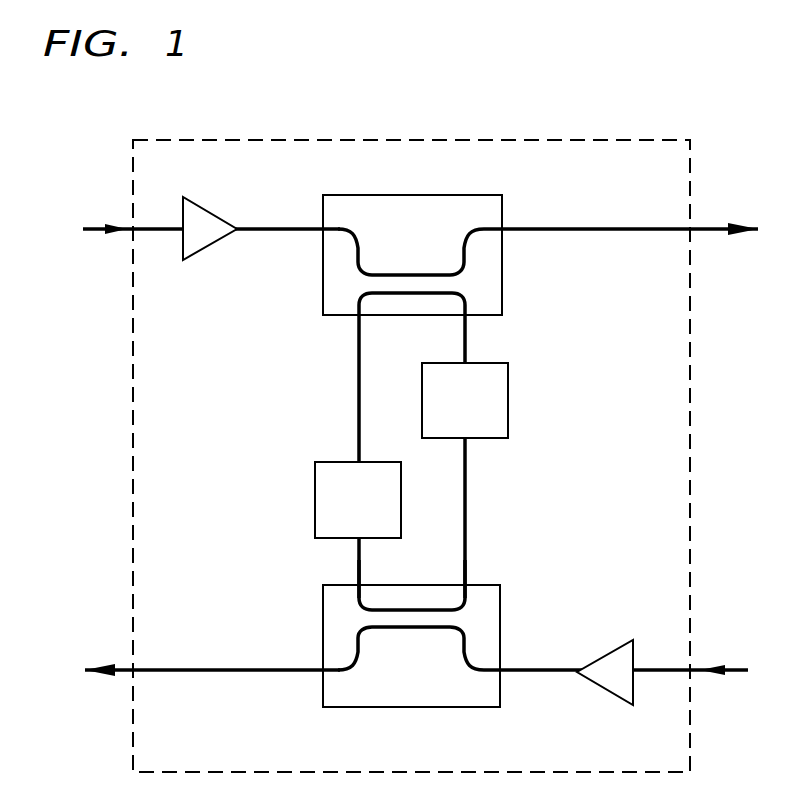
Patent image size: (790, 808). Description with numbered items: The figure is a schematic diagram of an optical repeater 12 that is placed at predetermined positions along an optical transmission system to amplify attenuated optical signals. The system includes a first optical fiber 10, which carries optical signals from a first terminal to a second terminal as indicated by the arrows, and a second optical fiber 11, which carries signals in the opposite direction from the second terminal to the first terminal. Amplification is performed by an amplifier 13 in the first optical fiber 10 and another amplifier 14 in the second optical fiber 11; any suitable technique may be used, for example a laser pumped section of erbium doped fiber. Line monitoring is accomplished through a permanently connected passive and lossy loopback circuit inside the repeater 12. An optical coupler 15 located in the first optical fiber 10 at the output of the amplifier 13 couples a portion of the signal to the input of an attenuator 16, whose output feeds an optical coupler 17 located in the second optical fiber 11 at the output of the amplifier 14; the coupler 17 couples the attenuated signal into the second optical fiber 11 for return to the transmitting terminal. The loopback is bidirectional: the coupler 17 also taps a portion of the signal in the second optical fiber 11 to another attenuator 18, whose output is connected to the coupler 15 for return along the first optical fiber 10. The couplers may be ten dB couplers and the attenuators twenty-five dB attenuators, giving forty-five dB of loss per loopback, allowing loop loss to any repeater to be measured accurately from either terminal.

The first optical fiber 10 is at (100, 227).
The second optical fiber 11 is at (102, 673).
The optical repeater 12 is at (306, 139).
The amplifier 13 is at (211, 210).
The amplifier 14 is at (610, 656).
The optical coupler 15 is at (503, 200).
The attenuator 16 is at (509, 403).
The optical coupler 17 is at (503, 603).
The attenuator 18 is at (315, 488).